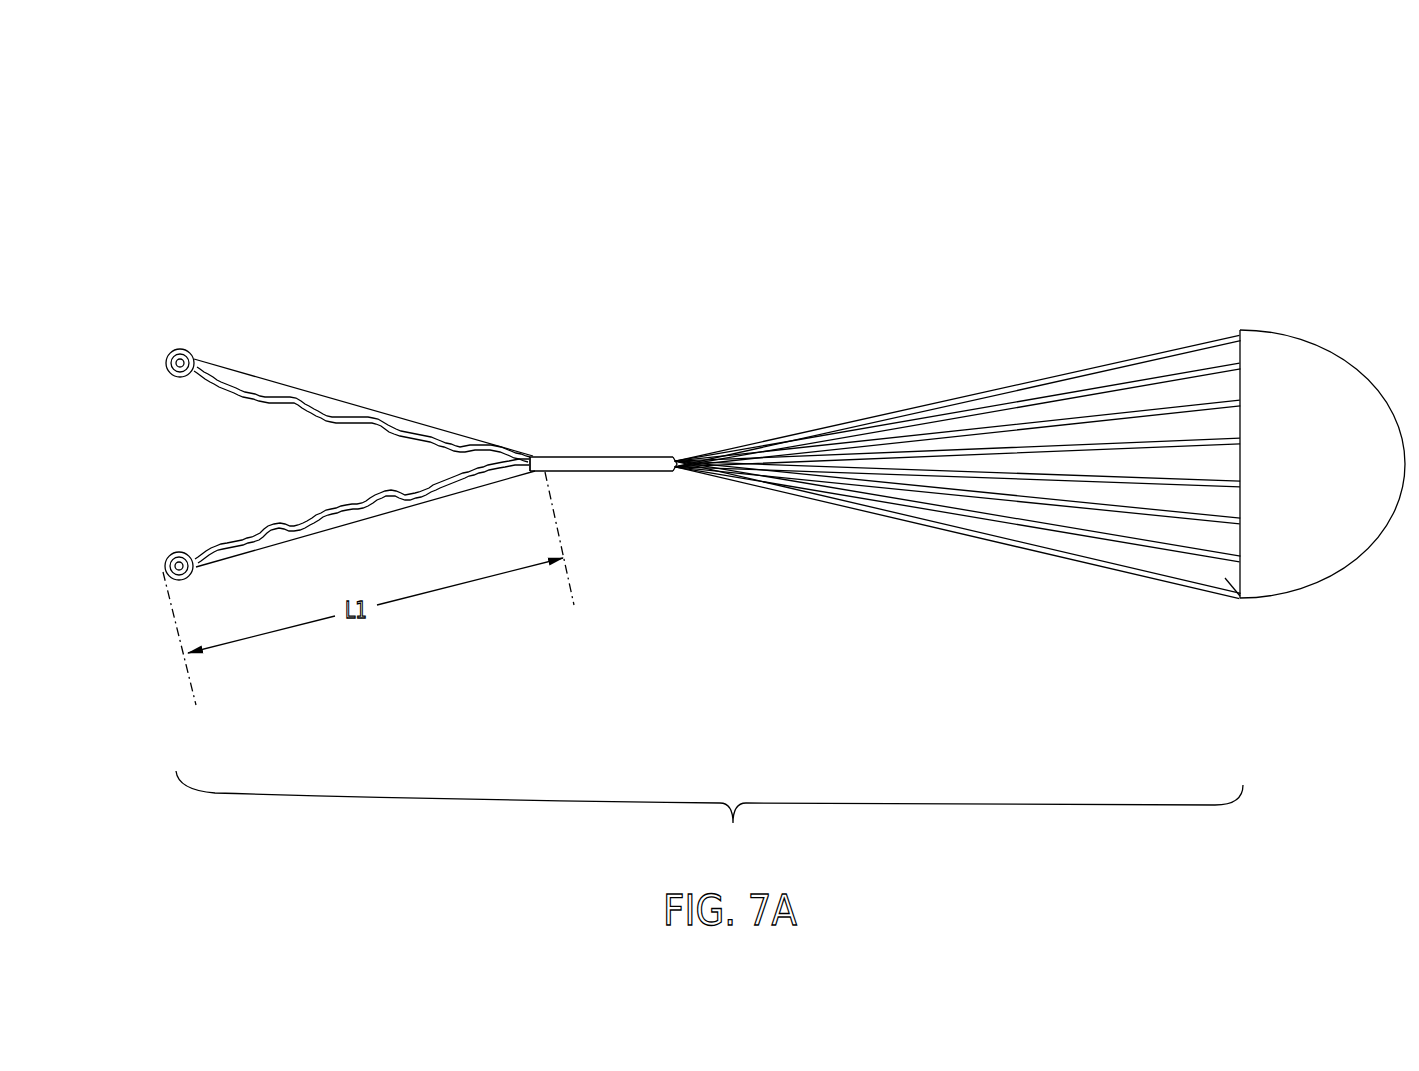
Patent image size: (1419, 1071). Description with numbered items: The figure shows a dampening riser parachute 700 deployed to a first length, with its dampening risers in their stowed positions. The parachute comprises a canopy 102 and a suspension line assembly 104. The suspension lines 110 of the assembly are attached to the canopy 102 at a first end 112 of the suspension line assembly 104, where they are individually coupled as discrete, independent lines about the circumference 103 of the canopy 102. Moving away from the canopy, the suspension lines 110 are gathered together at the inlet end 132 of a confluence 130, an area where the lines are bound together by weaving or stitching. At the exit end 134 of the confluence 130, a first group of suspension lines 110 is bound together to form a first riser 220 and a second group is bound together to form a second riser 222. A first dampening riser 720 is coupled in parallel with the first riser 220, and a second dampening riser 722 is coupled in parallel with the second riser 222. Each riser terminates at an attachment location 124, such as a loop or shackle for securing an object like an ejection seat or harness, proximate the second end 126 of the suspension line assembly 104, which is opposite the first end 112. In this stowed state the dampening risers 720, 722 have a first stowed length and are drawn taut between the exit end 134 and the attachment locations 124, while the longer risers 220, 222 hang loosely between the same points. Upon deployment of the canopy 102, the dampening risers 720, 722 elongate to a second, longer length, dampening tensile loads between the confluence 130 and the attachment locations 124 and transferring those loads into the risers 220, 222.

The dampening riser parachute 700 is at (1208, 158).
The canopy 102 is at (1286, 347).
The circumference 103 is at (1232, 339).
The suspension lines 110 is at (1030, 382).
The first end 112 is at (1238, 574).
The confluence 130 is at (672, 414).
The inlet end 132 is at (680, 470).
The exit end 134 is at (533, 456).
The first dampening riser 720 is at (370, 407).
The first riser 220 is at (308, 408).
The second dampening riser 722 is at (322, 536).
The second riser 222 is at (290, 528).
The attachment location 124 is at (166, 355).
The second end 126 is at (166, 577).
The suspension line assembly 104 is at (709, 813).